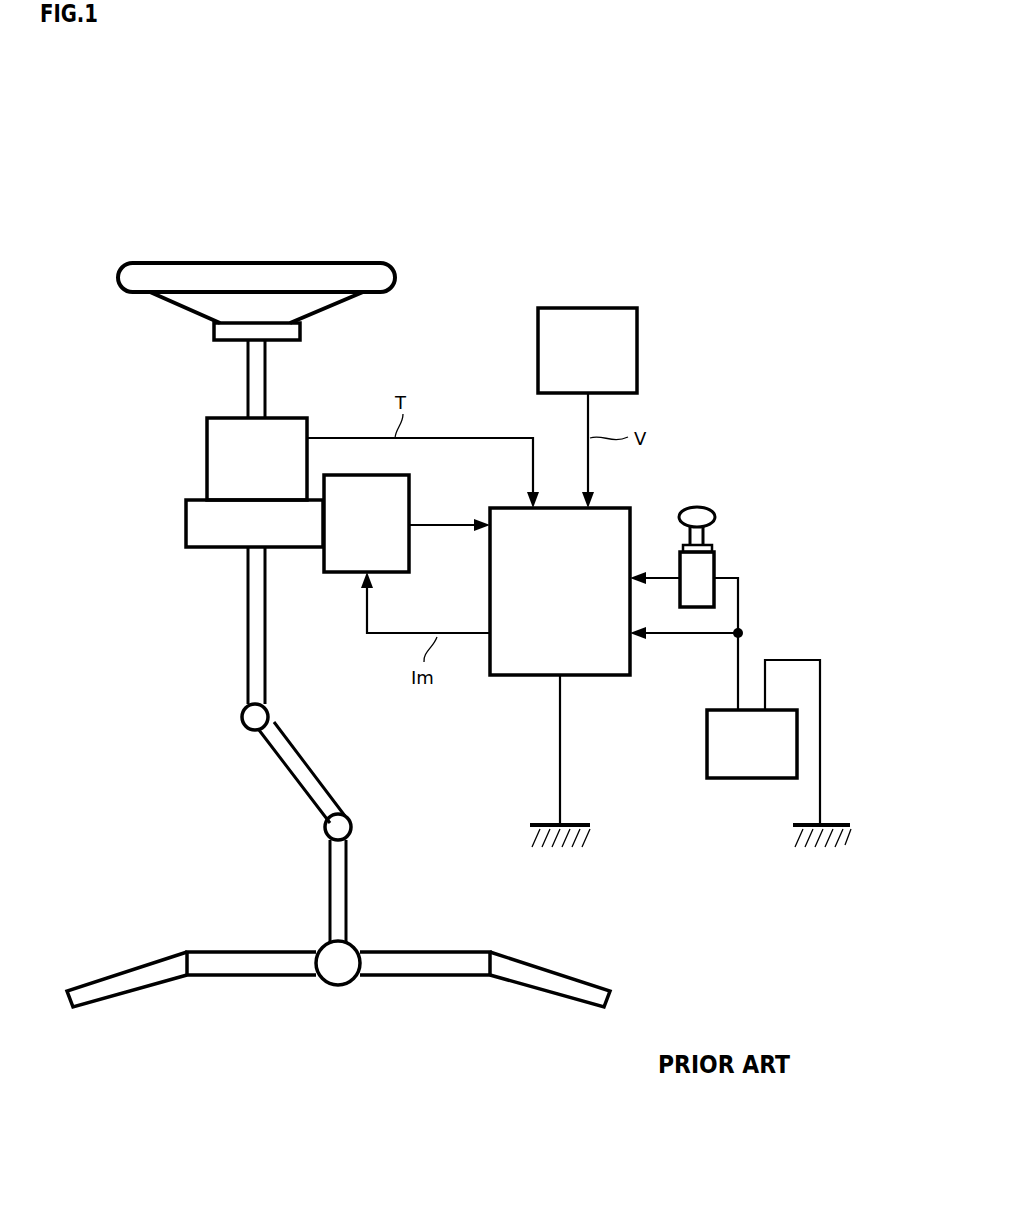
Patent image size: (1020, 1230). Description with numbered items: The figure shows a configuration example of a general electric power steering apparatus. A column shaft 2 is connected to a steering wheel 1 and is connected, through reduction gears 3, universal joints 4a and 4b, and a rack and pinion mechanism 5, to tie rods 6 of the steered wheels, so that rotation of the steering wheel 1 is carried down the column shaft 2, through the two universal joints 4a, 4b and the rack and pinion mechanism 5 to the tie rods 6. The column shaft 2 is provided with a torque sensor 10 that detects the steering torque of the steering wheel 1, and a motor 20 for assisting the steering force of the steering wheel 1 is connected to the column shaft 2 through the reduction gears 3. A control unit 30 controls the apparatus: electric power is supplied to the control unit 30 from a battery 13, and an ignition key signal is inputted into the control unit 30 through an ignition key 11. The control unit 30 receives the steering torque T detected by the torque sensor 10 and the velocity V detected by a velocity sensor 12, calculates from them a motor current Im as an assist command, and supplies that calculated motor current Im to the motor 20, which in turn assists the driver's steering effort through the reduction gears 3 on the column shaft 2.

The steering wheel 1 is at (395, 268).
The column shaft 2 is at (248, 388).
The reduction gears 3 is at (186, 535).
The universal joint 4a is at (240, 727).
The universal joint 4b is at (323, 832).
The rack and pinion mechanism 5 is at (362, 932).
The tie rods 6 is at (520, 965).
The torque sensor 10 is at (207, 442).
The ignition key 11 is at (716, 515).
The velocity sensor 12 is at (638, 318).
The battery 13 is at (707, 735).
The motor 20 is at (409, 478).
The control unit 30 is at (630, 521).